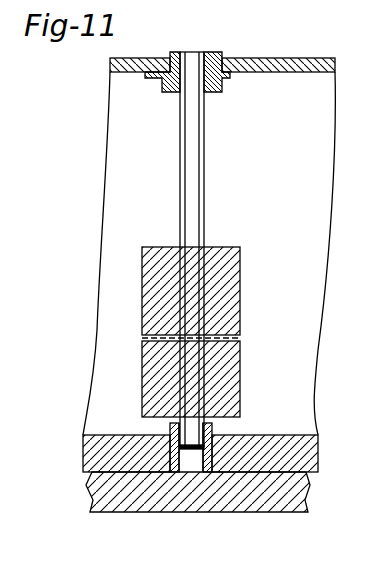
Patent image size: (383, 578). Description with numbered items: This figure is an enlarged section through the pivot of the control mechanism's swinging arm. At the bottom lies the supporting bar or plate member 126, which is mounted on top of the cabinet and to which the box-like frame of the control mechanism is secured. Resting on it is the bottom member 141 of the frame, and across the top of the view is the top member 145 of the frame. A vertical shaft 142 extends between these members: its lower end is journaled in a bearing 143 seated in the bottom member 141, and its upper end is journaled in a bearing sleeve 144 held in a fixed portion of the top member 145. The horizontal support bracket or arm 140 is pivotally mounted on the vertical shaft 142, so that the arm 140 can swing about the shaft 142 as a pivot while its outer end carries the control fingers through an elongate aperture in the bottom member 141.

The supporting bar or plate member 126 is at (123, 512).
The horizontal support bracket or arm 140 is at (240, 313).
The bottom member 141 is at (318, 452).
The vertical shaft 142 is at (205, 207).
The bearing 143 is at (213, 437).
The bearing sleeve 144 is at (222, 60).
The top member 145 is at (287, 62).